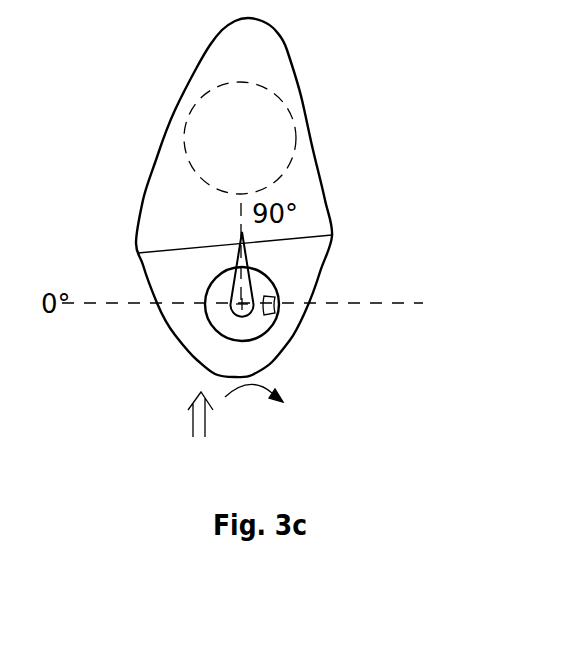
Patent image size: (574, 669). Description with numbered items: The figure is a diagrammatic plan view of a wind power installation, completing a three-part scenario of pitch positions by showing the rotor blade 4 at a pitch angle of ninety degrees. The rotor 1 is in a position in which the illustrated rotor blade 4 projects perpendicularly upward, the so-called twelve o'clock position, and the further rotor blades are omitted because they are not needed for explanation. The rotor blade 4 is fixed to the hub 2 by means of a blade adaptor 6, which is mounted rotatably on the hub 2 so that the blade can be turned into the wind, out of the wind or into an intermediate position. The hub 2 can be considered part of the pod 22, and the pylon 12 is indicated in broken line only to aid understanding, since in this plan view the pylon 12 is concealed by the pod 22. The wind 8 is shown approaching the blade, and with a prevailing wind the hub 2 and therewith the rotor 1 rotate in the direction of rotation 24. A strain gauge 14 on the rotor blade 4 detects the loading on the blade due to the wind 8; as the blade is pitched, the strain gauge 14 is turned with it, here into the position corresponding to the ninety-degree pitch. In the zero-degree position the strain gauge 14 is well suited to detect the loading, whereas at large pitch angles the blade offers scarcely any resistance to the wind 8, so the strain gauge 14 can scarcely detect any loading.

The rotor 1 is at (337, 378).
The hub 2 is at (317, 250).
The rotor blade 4 is at (233, 247).
The blade adaptor 6 is at (210, 322).
The wind 8 is at (210, 414).
The pylon 12 is at (200, 121).
The strain gauge 14 is at (275, 312).
The pod 22 is at (337, 92).
The direction of rotation 24 is at (265, 410).